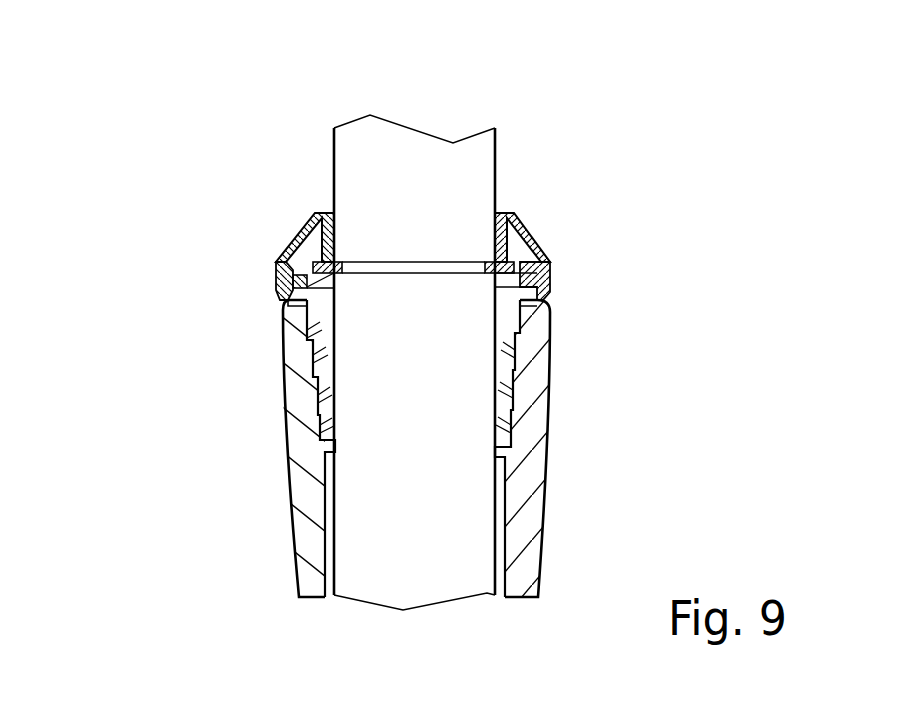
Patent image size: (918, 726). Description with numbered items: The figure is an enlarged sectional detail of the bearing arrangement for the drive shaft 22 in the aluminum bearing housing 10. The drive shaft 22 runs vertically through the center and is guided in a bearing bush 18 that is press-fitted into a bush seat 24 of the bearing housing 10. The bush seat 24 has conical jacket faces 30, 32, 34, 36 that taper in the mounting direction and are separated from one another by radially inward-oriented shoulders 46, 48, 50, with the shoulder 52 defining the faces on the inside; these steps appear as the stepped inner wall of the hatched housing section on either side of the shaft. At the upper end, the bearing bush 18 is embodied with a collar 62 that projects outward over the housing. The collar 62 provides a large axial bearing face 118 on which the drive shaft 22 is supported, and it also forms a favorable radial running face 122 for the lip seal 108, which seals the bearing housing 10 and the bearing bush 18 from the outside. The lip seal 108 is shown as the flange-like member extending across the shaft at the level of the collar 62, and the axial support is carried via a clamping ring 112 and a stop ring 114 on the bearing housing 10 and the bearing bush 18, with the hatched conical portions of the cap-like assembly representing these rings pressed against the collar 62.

The bearing housing 10 is at (196, 455).
The bearing bush 18 is at (413, 150).
The drive shaft 22 is at (400, 155).
The bush seat 24 is at (640, 426).
The conical jacket face 30 is at (285, 301).
The conical jacket face 32 is at (310, 340).
The conical jacket face 34 is at (315, 390).
The conical jacket face 36 is at (310, 418).
The shoulder 46 is at (540, 318).
The shoulder 48 is at (518, 375).
The shoulder 50 is at (513, 410).
The shoulder 52 is at (511, 450).
The collar 62 is at (288, 260).
The lip seal 108 is at (508, 213).
The clamping ring 112 is at (527, 221).
The stop ring 114 is at (548, 258).
The axial bearing face 118 is at (507, 298).
The radial running face 122 is at (282, 292).